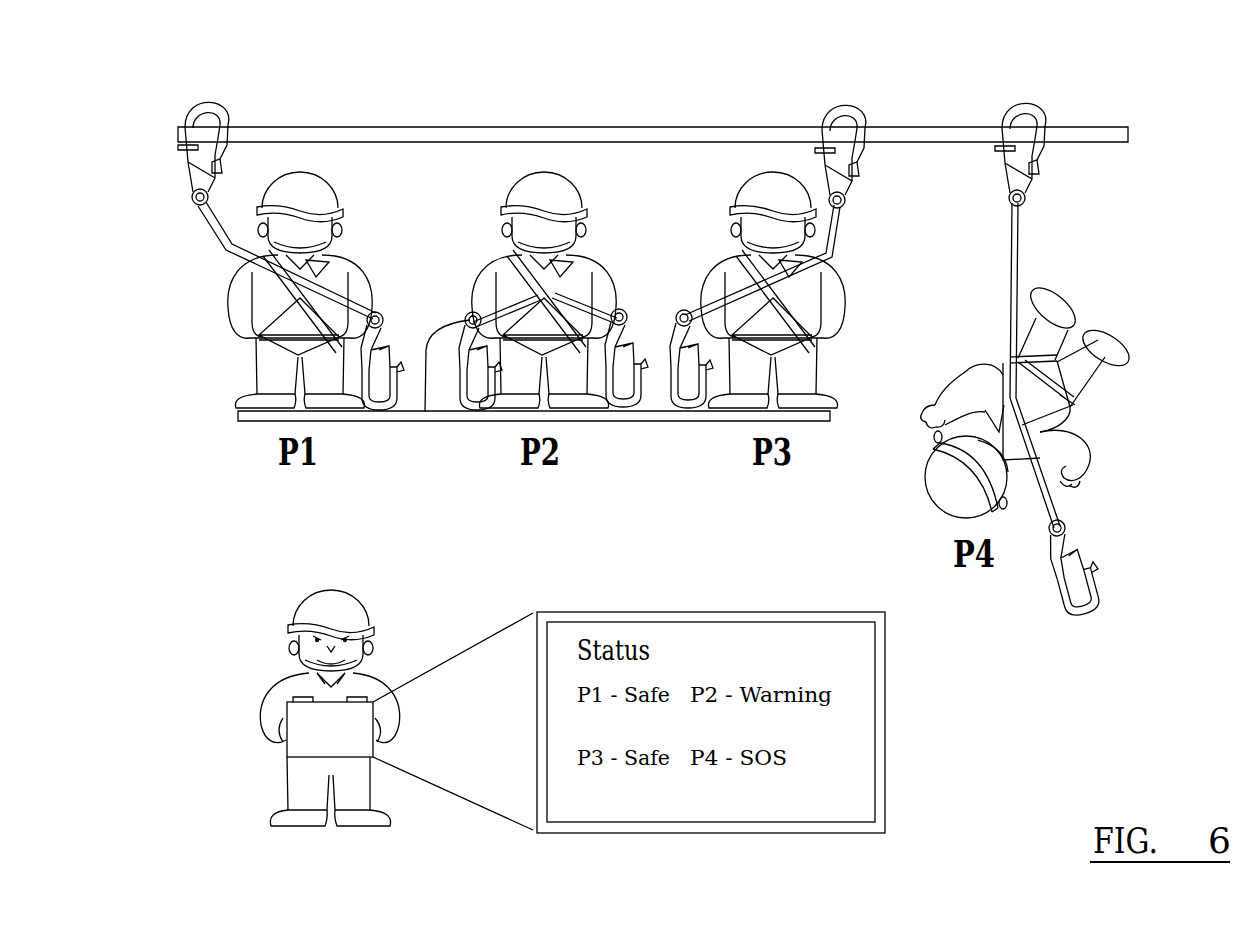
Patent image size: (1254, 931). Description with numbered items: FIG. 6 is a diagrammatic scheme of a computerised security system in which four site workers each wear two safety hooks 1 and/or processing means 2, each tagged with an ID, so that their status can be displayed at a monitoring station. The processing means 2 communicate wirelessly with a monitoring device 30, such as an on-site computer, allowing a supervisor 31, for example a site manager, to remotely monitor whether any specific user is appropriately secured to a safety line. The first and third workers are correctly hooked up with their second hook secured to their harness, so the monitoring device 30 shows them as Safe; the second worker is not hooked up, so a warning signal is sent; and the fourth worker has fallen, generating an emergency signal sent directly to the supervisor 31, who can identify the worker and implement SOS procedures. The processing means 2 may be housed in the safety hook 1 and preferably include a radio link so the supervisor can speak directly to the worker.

The safety hook 1 is at (222, 124).
The processing means 2 is at (226, 176).
The monitoring device 30 is at (317, 722).
The supervisor 31 is at (356, 670).